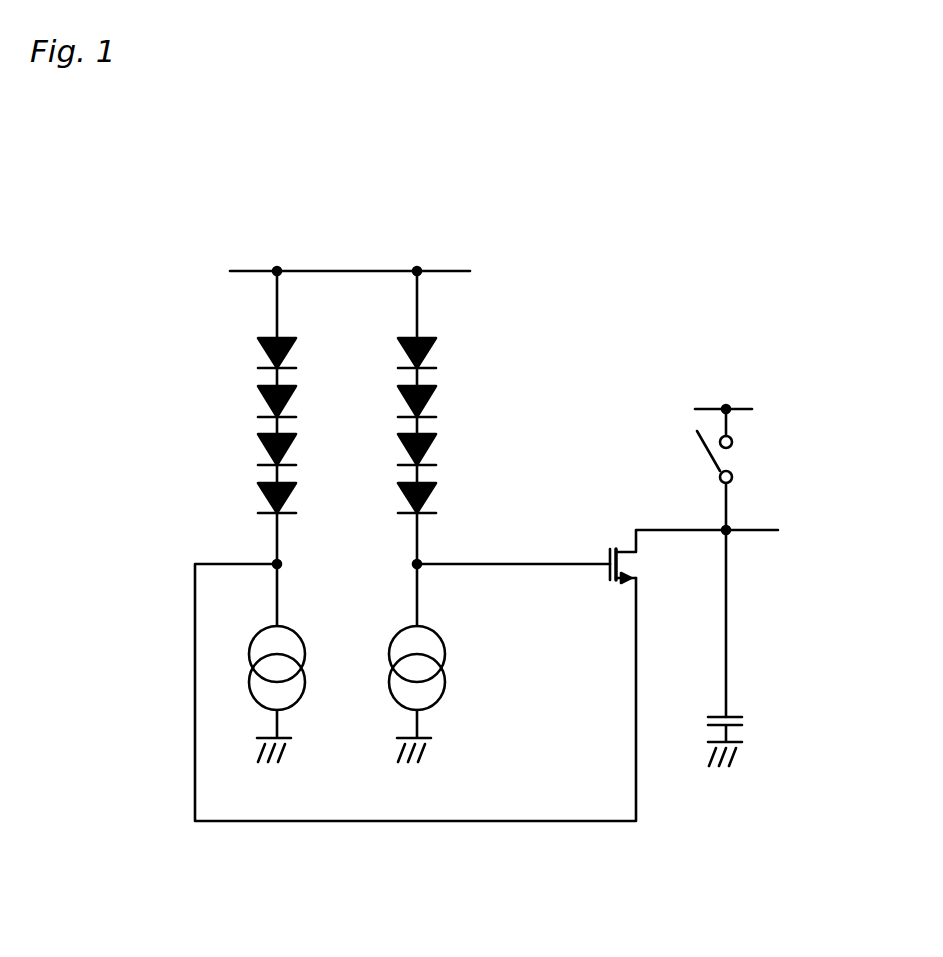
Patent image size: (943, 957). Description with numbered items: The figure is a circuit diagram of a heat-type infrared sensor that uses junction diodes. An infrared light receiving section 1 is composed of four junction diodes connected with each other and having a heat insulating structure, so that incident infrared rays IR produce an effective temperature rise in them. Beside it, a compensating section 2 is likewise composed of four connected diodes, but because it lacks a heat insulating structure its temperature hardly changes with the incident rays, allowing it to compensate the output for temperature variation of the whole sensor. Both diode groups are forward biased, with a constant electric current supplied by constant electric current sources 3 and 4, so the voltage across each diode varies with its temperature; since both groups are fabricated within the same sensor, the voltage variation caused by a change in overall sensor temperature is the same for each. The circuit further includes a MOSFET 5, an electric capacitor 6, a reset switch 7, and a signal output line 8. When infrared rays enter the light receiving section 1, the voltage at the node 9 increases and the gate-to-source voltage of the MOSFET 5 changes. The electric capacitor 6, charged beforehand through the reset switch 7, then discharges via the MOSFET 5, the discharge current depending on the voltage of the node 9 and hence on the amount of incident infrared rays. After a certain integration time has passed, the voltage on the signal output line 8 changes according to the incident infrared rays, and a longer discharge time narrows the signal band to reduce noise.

The infrared light receiving section 1 is at (443, 400).
The compensating section 2 is at (238, 395).
The constant electric current source 3 is at (451, 637).
The constant electric current source 4 is at (233, 668).
The MOSFET 5 is at (622, 533).
The electric capacitor 6 is at (732, 710).
The reset switch 7 is at (740, 448).
The signal output line 8 is at (777, 520).
The node 9 is at (425, 572).
The infrared radiation IR is at (441, 462).